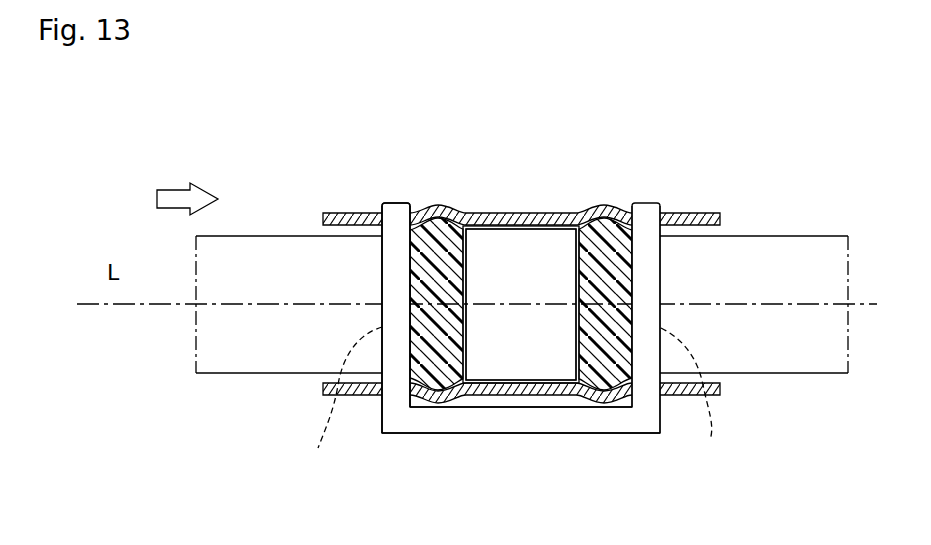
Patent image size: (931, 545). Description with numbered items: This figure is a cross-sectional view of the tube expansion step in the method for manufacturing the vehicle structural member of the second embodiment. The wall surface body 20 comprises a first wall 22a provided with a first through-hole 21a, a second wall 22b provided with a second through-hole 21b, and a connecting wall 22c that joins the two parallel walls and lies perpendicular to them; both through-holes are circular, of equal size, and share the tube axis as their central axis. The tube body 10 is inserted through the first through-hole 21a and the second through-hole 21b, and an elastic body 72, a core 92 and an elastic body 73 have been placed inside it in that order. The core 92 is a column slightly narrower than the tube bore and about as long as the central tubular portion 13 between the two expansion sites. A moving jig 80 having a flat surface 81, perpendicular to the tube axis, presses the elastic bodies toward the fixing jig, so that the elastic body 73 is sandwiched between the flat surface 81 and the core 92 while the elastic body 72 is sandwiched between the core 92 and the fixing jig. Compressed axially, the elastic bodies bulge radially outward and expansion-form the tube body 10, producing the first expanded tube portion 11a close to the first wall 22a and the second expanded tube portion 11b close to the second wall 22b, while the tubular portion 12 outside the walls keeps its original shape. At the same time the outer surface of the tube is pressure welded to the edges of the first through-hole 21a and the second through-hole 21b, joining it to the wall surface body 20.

The tube body 10 is at (326, 214).
The first expanded tube portion 11a is at (443, 208).
The second expanded tube portion 11b is at (607, 206).
The tubular portion 12 is at (358, 212).
The tubular portion 13 is at (520, 213).
The wall surface body 20 is at (658, 203).
The first through-hole 21a is at (337, 401).
The second through-hole 21b is at (703, 402).
The first wall 22a is at (382, 425).
The second wall 22b is at (661, 422).
The connecting wall 22c is at (520, 433).
The elastic body 72 is at (582, 358).
The elastic body 73 is at (452, 358).
The moving jig 80 is at (255, 373).
The flat surface 81 is at (388, 204).
The core 92 is at (542, 368).